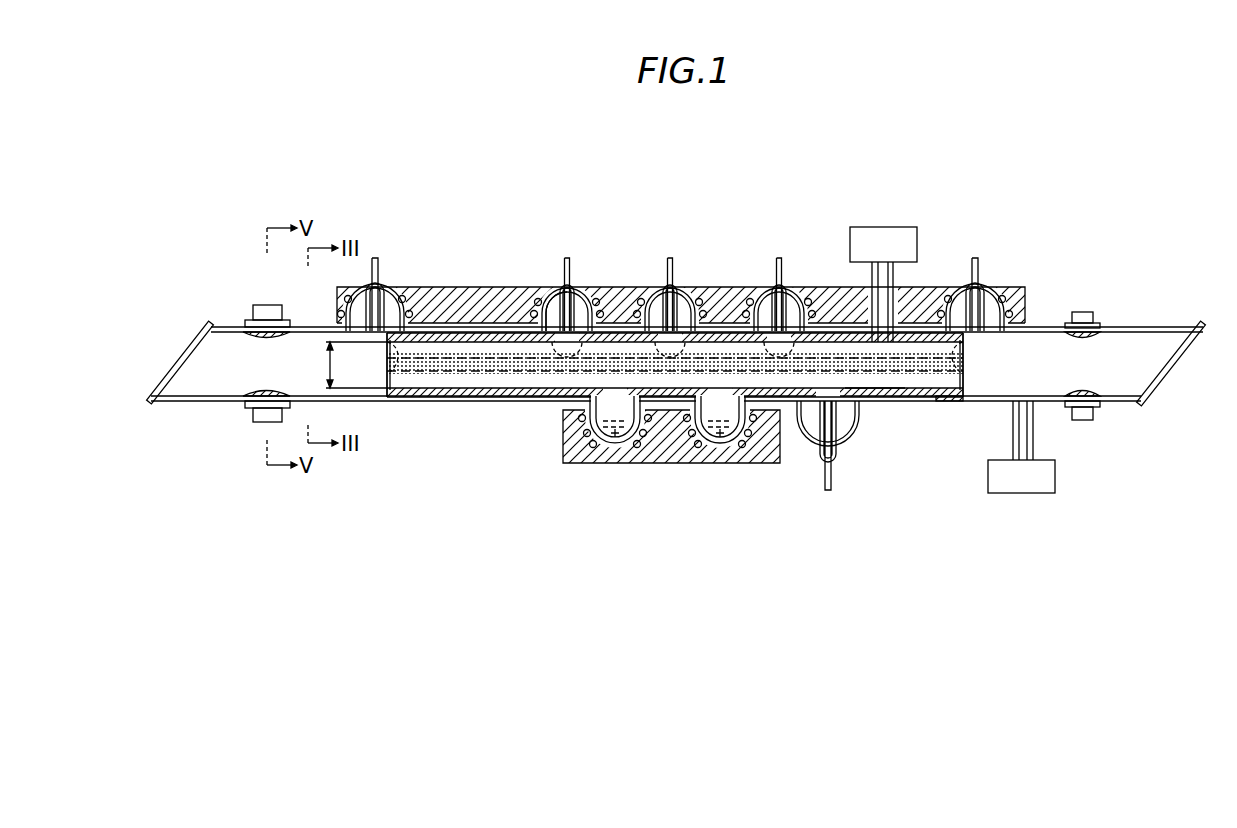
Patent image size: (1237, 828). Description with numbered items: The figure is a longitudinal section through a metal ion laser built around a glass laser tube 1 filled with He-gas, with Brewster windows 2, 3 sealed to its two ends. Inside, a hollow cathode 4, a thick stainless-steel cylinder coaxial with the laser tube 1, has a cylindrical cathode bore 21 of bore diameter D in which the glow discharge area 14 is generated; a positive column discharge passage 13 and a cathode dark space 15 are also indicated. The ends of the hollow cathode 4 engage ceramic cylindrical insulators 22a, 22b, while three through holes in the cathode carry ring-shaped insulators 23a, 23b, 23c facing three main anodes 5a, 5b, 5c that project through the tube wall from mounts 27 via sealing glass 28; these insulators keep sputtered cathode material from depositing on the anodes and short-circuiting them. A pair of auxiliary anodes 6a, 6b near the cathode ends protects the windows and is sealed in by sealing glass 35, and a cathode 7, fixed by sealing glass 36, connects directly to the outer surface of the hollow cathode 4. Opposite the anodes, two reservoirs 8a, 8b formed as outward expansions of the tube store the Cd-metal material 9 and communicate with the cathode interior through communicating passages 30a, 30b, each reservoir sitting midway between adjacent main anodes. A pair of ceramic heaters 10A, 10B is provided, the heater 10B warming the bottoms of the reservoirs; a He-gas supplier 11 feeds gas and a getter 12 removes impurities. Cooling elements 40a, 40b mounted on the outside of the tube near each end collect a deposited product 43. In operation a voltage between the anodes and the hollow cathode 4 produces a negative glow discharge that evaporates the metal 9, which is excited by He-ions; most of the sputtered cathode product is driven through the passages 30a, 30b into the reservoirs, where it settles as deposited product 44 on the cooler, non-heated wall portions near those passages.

The laser tube 1 is at (917, 404).
The Brewster window 2 is at (173, 367).
The Brewster window 3 is at (1180, 358).
The hollow cathode 4 is at (888, 396).
The main anode 5a is at (572, 262).
The main anode 5b is at (677, 263).
The main anode 5c is at (784, 263).
The auxiliary anode 6a is at (385, 281).
The auxiliary anode 6b is at (983, 266).
The cathode 7 is at (836, 480).
The reservoir 8a is at (622, 412).
The reservoir 8b is at (718, 414).
The metal material 9 is at (617, 423).
The ceramic heater 10A is at (461, 288).
The ceramic heater 10B is at (563, 455).
The He-gas supplier 11 is at (910, 229).
The getter 12 is at (1052, 488).
The positive column discharge passage 13 is at (961, 380).
The glow discharge area 14 is at (790, 368).
The cathode dark space 15 is at (865, 383).
The cathode bore 21 is at (445, 393).
The cylindrical insulator 22a is at (394, 403).
The cylindrical insulator 22b is at (938, 403).
The ring-shaped insulator 23a is at (592, 305).
The ring-shaped insulator 23b is at (698, 305).
The ring-shaped insulator 23c is at (803, 305).
The recess 27 is at (545, 320).
The O-ring 28 is at (562, 288).
The communicating passage 30a is at (597, 444).
The communicating passage 30b is at (742, 436).
The sealing glass 35 is at (388, 298).
The sealing glass 36 is at (848, 436).
The cooling element 40a is at (258, 306).
The cooling element 40b is at (258, 421).
The deposited product 43 is at (262, 394).
The deposited product 44 is at (586, 417).
The bore diameter D is at (348, 365).